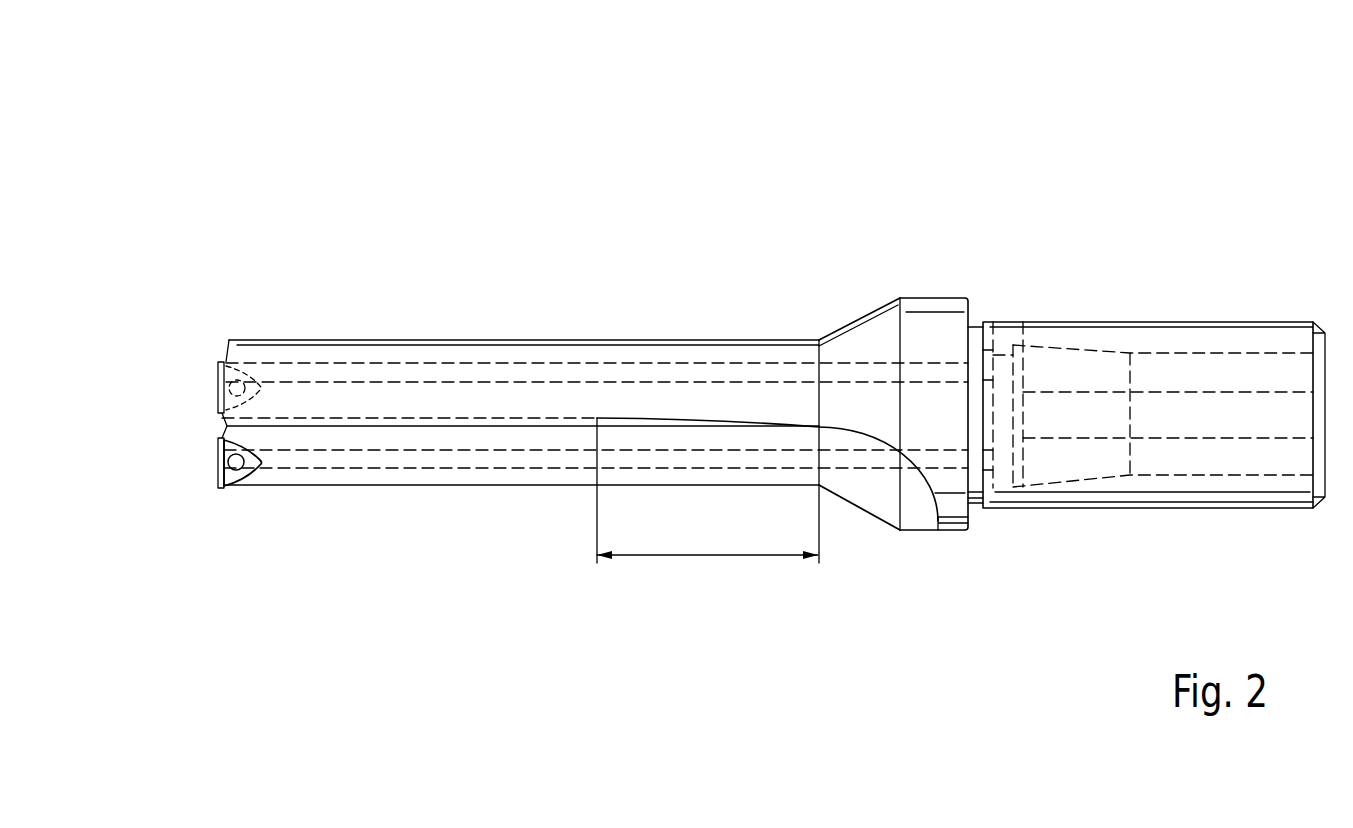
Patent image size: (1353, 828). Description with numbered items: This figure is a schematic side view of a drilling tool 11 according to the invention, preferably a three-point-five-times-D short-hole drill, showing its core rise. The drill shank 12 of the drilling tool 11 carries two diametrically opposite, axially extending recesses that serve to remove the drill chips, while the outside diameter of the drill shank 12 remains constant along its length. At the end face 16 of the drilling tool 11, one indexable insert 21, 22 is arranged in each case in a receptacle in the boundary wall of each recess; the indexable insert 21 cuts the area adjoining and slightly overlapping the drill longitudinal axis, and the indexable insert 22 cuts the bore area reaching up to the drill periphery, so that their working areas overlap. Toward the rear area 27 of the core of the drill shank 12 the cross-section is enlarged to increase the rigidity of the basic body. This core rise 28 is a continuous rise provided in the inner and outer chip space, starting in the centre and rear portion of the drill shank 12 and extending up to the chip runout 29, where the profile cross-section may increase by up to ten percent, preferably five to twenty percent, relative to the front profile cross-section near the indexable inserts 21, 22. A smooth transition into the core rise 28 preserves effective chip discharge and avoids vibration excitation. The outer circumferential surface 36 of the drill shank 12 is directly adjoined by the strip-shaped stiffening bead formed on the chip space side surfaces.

The drilling tool 11 is at (760, 132).
The drill shank 12 is at (464, 296).
The end face 16 is at (196, 337).
The indexable insert 21 is at (218, 398).
The indexable insert 22 is at (218, 457).
The rear area 27 is at (818, 270).
The core rise 28 is at (703, 572).
The chip runout 29 is at (917, 510).
The circumferential surface 36 is at (680, 340).